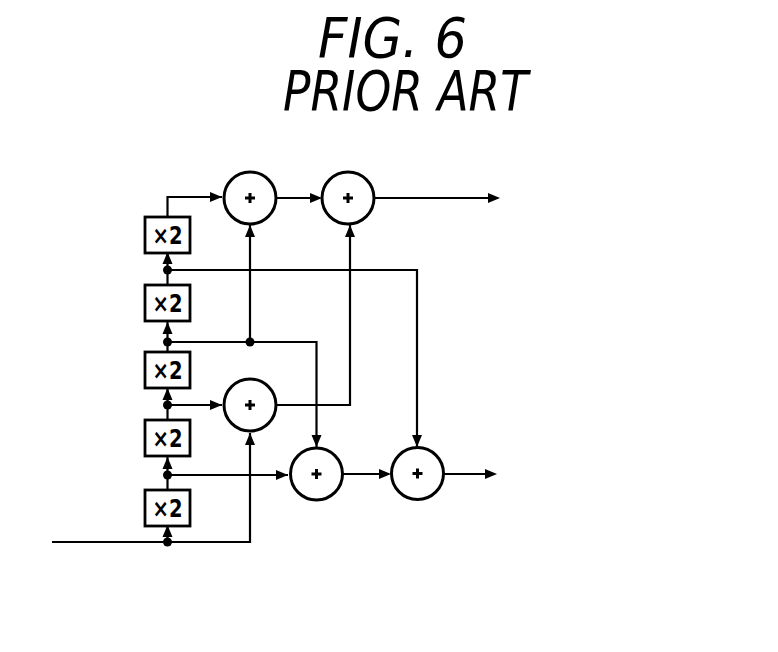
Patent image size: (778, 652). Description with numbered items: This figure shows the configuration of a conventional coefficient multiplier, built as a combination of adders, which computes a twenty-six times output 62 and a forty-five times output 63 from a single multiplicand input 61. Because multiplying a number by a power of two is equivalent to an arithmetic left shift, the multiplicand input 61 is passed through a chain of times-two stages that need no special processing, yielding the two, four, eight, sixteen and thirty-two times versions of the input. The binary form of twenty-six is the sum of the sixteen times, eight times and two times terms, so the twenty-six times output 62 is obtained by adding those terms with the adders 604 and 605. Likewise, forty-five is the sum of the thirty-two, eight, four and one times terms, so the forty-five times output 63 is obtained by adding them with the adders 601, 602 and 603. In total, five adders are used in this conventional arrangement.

The multiplicand input 61 is at (80, 540).
The 26 times output 62 is at (467, 471).
The 45 times output 63 is at (447, 196).
The adder 601 is at (268, 384).
The adder 602 is at (259, 174).
The adder 603 is at (366, 176).
The adder 604 is at (340, 450).
The adder 605 is at (436, 455).